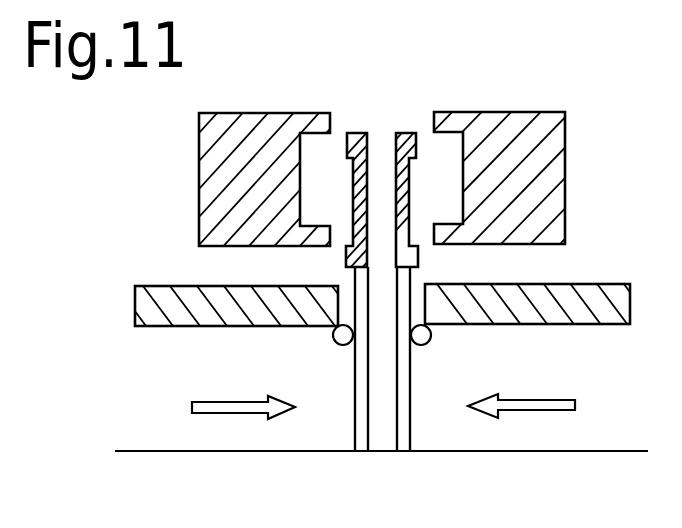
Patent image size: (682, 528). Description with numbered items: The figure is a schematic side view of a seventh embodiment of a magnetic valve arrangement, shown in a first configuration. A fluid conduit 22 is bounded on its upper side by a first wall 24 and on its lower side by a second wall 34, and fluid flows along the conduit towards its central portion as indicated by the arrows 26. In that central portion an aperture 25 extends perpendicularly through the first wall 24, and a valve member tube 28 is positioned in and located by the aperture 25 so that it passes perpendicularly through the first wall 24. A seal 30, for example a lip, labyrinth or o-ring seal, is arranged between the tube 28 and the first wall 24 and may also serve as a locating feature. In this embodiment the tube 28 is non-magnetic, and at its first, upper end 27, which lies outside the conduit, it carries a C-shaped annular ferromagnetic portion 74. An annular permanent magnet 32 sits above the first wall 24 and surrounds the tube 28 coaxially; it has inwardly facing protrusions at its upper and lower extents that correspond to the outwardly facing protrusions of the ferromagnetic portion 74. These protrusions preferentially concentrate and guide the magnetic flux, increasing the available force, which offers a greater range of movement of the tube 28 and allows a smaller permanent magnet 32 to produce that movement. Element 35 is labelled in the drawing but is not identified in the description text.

The fluid conduit 22 is at (197, 435).
The first wall 24 is at (162, 295).
The aperture 25 is at (415, 300).
The arrows 26 is at (192, 405).
The first end 27 is at (407, 132).
The valve member tube 28 is at (408, 358).
The seal 30 is at (340, 342).
The permanent magnet 32 is at (538, 153).
The second wall 34 is at (315, 452).
The right leg 35 is at (387, 452).
The C-shaped annular ferromagnetic portion 74 is at (360, 132).